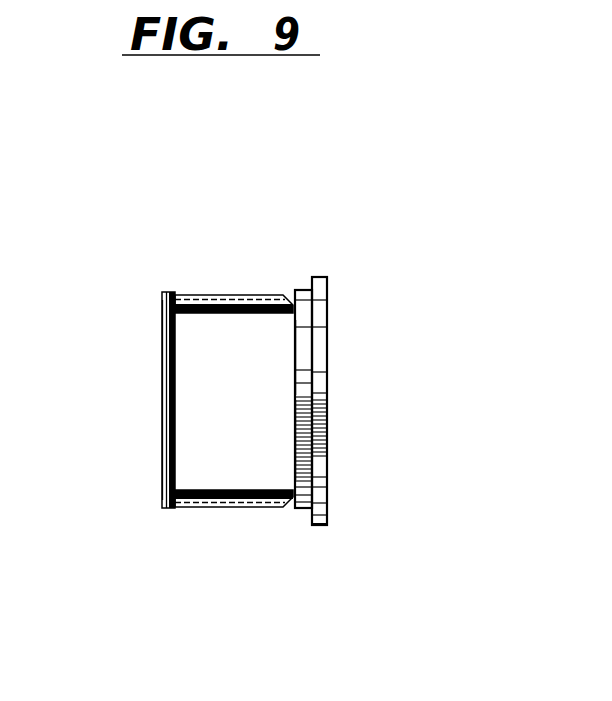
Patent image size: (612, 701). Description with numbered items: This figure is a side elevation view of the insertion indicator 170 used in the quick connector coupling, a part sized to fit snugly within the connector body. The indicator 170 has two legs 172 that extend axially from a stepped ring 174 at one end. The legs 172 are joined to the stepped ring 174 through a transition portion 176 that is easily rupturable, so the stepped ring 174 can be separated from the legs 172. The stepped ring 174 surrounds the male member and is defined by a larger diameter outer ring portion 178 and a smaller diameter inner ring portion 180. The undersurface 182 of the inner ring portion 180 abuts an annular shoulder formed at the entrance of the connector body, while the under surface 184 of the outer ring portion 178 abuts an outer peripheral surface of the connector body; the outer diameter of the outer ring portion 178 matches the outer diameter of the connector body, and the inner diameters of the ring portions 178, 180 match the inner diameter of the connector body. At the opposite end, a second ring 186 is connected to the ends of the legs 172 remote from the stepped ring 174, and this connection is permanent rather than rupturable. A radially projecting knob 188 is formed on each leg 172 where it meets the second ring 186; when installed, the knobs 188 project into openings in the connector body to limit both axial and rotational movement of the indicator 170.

The insertion indicator 170 is at (328, 157).
The legs 172 is at (205, 296).
The stepped ring 174 is at (329, 277).
The transition portion 176 is at (292, 295).
The outer ring portion 178 is at (318, 467).
The inner ring portion 180 is at (303, 447).
The undersurface of inner ring portion 182 is at (296, 393).
The under surface of outer ring portion 184 is at (324, 523).
The second ring 186 is at (167, 397).
The radially projecting knob 188 is at (168, 293).